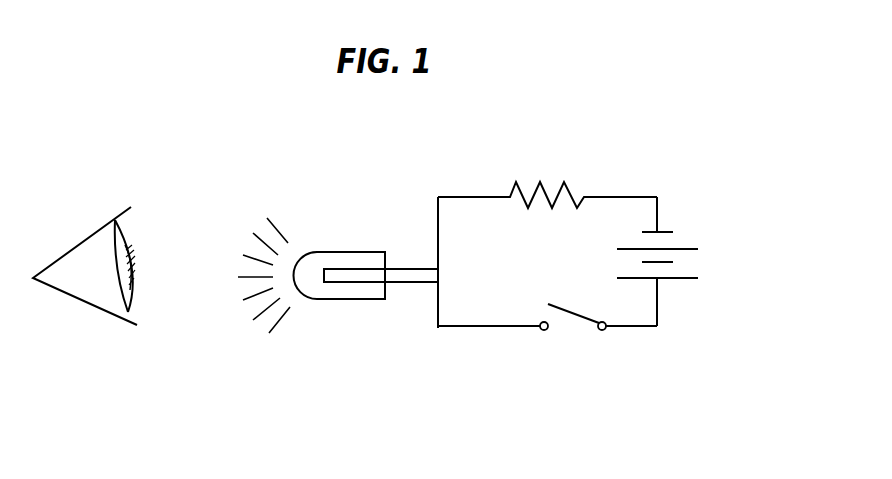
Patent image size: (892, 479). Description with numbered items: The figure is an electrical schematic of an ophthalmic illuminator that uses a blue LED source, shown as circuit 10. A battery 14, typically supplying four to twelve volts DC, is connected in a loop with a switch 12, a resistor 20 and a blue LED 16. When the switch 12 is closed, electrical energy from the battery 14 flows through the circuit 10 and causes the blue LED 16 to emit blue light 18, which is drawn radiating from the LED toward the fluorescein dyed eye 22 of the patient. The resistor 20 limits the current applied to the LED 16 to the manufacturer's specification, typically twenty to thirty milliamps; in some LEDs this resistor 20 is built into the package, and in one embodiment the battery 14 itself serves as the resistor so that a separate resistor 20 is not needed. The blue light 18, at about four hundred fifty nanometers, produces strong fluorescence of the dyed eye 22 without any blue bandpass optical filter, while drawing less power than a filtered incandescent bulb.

The circuit 10 is at (715, 148).
The switch 12 is at (585, 325).
The battery 14 is at (680, 282).
The blue LED 16 is at (365, 252).
The blue light 18 is at (284, 327).
The resistor 20 is at (547, 188).
The fluorescein dyed eye 22 is at (64, 298).